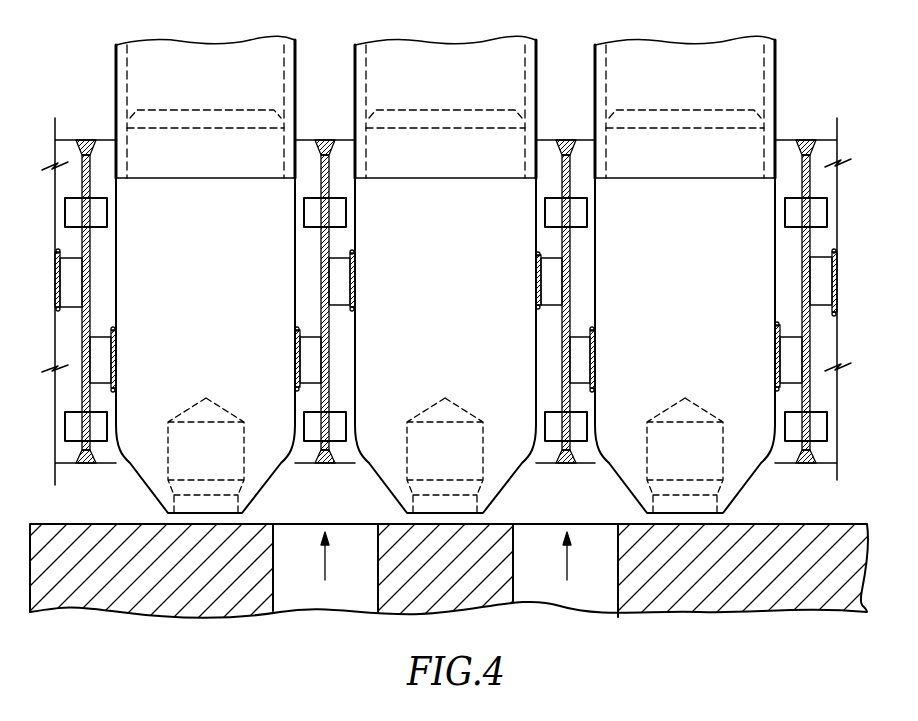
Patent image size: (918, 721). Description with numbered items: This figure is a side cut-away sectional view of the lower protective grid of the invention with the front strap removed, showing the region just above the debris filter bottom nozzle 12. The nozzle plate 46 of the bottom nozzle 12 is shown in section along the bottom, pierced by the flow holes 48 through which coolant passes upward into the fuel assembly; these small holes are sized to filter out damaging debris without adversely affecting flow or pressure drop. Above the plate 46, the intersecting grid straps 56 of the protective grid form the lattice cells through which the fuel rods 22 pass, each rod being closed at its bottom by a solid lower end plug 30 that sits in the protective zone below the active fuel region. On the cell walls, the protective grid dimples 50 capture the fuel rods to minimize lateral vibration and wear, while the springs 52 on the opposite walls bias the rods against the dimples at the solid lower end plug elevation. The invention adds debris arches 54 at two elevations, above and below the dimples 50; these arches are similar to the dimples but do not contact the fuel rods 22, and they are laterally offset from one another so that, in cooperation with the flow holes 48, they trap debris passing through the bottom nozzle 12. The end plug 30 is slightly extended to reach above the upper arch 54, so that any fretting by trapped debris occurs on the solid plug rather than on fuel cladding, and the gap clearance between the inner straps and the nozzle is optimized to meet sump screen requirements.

The bottom nozzle 12 is at (447, 363).
The fuel rod 22 is at (295, 70).
The lower end plug 30 is at (195, 298).
The nozzle plate 46 is at (449, 558).
The flow holes 48 is at (342, 588).
The protective grid dimples 50 is at (56, 283).
The upper bracket/spacer 52 is at (354, 280).
The debris arches 54 is at (72, 212).
The grid straps 56 is at (92, 240).